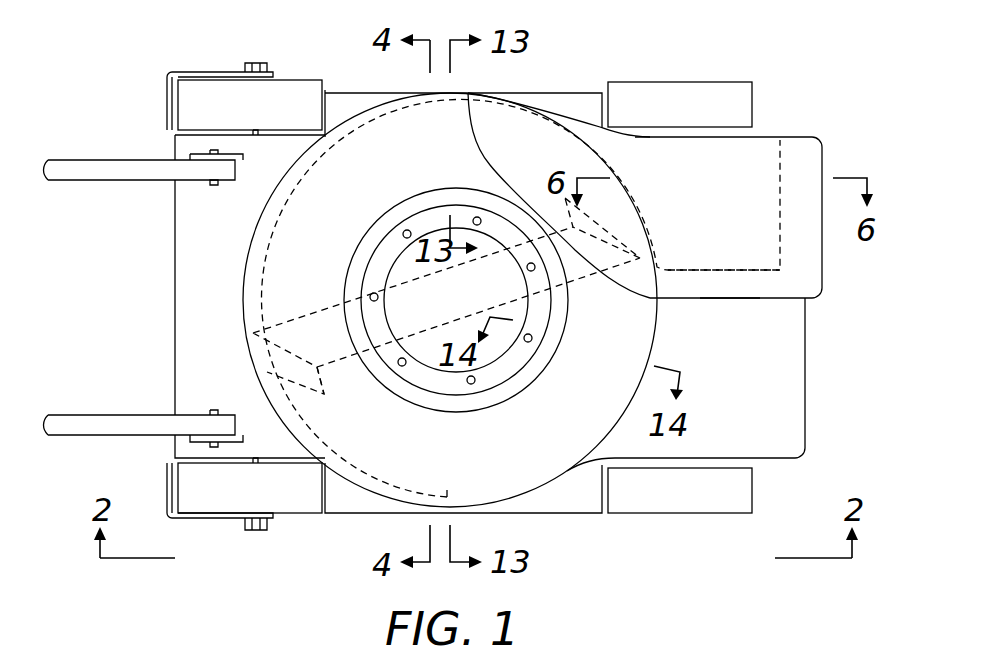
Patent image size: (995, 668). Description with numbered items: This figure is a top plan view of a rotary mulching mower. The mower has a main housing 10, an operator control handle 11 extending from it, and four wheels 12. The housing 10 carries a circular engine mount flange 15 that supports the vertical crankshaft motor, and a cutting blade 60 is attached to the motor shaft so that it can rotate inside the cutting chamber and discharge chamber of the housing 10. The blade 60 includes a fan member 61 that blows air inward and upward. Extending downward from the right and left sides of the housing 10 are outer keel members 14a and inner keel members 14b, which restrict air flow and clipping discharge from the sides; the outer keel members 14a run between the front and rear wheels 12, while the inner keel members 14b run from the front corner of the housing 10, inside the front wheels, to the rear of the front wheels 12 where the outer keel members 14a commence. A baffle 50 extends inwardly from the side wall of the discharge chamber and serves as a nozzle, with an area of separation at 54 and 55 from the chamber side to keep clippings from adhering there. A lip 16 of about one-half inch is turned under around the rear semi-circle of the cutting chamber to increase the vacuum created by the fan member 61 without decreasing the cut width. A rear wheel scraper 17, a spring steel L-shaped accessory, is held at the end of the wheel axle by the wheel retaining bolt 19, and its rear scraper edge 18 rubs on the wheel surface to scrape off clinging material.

The main housing 10 is at (499, 463).
The operator control handle 11 is at (130, 160).
The wheels 12 is at (675, 82).
The outer keel members 14a is at (532, 93).
The inner keel members 14b is at (768, 137).
The circular engine mount flange 15 is at (402, 222).
The lip 16 is at (360, 125).
The rear wheel scraper 17 is at (218, 72).
The rear scraper edge 18 is at (172, 107).
The wheel retaining bolt 19 is at (254, 63).
The baffle 50 is at (713, 212).
The area of separation 54 is at (687, 270).
The area of separation 55 is at (690, 298).
The cutting blade 60 is at (302, 318).
The fan member 61 is at (316, 398).